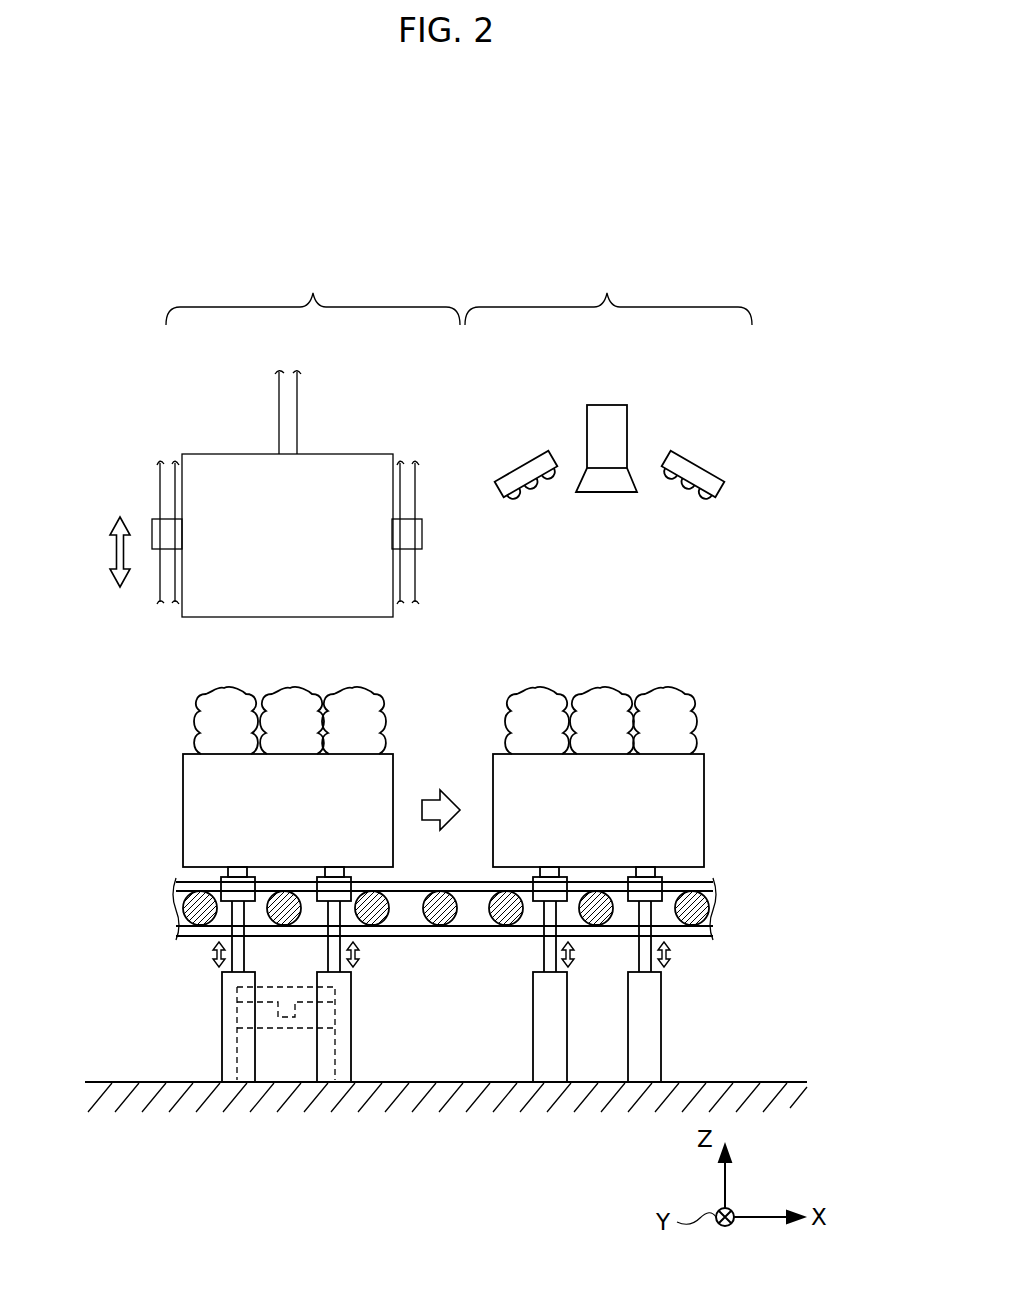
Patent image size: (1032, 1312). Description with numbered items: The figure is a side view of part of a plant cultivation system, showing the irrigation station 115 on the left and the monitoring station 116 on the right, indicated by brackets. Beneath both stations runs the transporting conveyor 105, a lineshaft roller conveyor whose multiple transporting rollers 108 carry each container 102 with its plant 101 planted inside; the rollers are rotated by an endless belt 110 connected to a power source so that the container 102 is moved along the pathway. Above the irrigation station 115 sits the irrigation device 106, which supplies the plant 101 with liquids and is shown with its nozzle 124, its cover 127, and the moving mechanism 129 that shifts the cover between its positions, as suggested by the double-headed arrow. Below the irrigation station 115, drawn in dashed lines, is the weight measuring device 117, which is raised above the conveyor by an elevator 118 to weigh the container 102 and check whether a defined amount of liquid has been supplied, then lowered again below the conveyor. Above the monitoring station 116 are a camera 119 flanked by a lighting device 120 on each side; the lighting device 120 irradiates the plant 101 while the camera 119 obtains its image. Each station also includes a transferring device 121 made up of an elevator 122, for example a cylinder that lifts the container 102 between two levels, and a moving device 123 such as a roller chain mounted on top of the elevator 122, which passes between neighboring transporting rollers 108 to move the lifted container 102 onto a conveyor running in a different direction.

The plant 101 is at (357, 702).
The container 102 is at (197, 788).
The transporting conveyor 105 is at (484, 933).
The irrigation device 106 is at (244, 505).
The transporting rollers 108 is at (438, 913).
The endless belt 110 is at (462, 937).
The irrigation station 115 is at (313, 295).
The monitoring station 116 is at (608, 295).
The weight measuring device 117 is at (237, 1010).
The elevator 118 is at (279, 1063).
The camera 119 is at (617, 422).
The lighting device 120 is at (523, 468).
The transferring device 121 is at (428, 991).
The elevator 122 is at (222, 1028).
The moving device 123 is at (228, 882).
The nozzle 124 is at (291, 418).
The cover 127 is at (233, 466).
The moving mechanism 129 is at (160, 490).